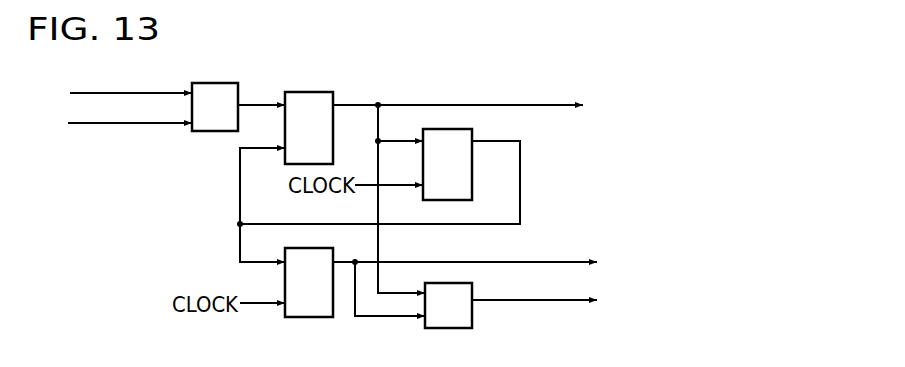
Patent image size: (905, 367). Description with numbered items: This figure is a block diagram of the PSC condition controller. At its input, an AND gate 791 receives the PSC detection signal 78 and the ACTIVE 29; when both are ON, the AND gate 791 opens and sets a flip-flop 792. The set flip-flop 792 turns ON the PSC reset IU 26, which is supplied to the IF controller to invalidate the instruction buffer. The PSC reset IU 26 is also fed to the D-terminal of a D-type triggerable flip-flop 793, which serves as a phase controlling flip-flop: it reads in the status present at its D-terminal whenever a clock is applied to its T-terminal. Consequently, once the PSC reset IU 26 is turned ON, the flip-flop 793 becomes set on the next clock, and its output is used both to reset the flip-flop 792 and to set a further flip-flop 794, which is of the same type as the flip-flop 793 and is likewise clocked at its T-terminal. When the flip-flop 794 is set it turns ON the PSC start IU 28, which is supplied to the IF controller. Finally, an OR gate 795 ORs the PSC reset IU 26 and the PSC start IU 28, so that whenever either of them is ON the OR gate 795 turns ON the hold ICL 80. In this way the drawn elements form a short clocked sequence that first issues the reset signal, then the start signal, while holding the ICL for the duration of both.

The PSC detection signal 78 is at (75, 92).
The ACTIVE 29 is at (74, 122).
The AND gate 791 is at (203, 83).
The flip-flop 792 is at (303, 91).
The D-type triggerable flip-flop 793 is at (473, 154).
The flip-flop 794 is at (316, 318).
The OR gate 795 is at (452, 328).
The PSC reset IU 26 is at (567, 103).
The PSC start IU 28 is at (575, 258).
The hold ICL 80 is at (577, 305).